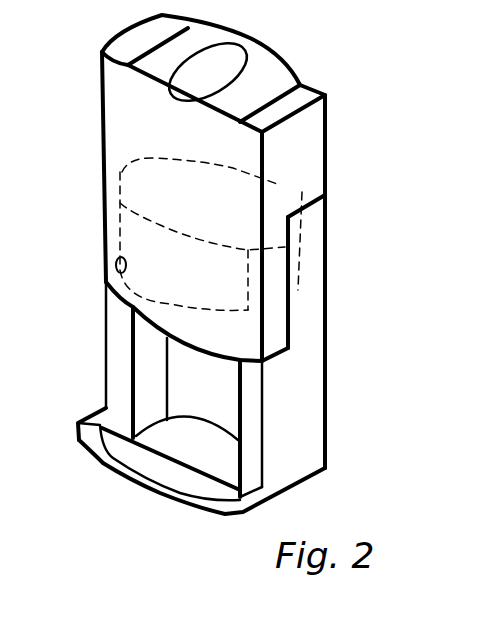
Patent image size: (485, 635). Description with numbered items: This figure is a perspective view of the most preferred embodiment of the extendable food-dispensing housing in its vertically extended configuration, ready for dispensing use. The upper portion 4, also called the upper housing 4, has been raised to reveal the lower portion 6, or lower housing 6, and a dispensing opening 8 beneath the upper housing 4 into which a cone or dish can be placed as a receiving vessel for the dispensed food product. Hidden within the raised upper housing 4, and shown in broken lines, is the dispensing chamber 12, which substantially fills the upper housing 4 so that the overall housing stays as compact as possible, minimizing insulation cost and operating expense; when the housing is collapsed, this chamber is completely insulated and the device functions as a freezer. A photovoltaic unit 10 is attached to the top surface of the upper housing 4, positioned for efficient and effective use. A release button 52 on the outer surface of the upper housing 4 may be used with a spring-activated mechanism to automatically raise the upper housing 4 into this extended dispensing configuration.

The upper portion 4 is at (308, 140).
The lower portion 6 is at (312, 263).
The dispensing opening 8 is at (194, 399).
The photovoltaic unit 10 is at (246, 69).
The dispensing chamber 12 is at (147, 208).
The release button 52 is at (116, 267).